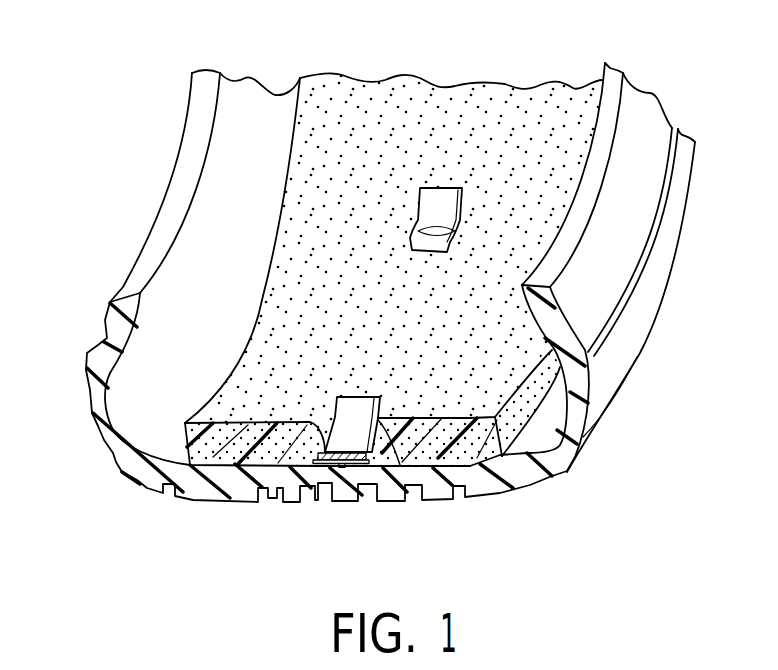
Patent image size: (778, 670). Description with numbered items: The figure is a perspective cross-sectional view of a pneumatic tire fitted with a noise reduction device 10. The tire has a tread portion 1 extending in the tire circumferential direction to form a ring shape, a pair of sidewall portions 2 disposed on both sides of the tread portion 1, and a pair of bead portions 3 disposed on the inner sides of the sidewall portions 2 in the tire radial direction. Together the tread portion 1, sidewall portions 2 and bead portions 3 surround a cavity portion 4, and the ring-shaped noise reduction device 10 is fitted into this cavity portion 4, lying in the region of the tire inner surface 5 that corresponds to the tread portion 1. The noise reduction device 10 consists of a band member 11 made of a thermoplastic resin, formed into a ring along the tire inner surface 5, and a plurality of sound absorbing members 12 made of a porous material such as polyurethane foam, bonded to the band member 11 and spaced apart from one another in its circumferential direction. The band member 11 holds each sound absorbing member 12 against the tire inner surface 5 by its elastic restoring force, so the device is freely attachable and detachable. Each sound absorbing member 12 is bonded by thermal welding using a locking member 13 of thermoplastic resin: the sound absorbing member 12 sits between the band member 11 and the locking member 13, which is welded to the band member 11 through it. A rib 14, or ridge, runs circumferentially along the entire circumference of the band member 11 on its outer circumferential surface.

The tread portion 1 is at (437, 502).
The sidewall portions 2 is at (590, 377).
The bead portions 3 is at (562, 295).
The cavity portion 4 is at (249, 158).
The tire inner surface 5 is at (157, 405).
The noise reduction device 10 is at (264, 262).
The band member 11 is at (315, 465).
The sound absorbing member 12 is at (370, 98).
The locking member 13 is at (447, 195).
The rib 14 is at (345, 468).